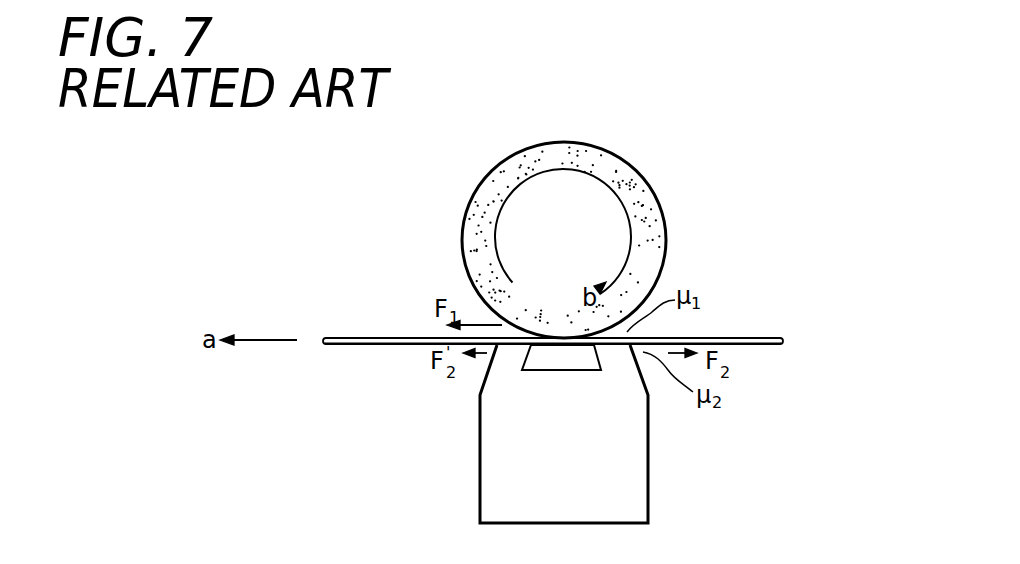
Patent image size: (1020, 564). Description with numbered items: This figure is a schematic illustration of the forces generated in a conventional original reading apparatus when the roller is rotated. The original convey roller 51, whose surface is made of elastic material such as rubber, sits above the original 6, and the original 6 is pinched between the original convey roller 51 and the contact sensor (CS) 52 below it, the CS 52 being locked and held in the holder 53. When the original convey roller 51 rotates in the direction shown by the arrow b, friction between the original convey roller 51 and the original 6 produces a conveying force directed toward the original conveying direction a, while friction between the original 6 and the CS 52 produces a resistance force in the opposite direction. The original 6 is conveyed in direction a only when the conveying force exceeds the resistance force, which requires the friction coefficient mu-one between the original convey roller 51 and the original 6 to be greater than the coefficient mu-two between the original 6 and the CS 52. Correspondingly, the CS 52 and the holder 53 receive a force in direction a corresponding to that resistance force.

The original convey roller 51 is at (600, 155).
The image sensor of complete contact type (contact sensor, CS) 52 is at (575, 371).
The holder 53 is at (649, 492).
The original 6 is at (775, 338).